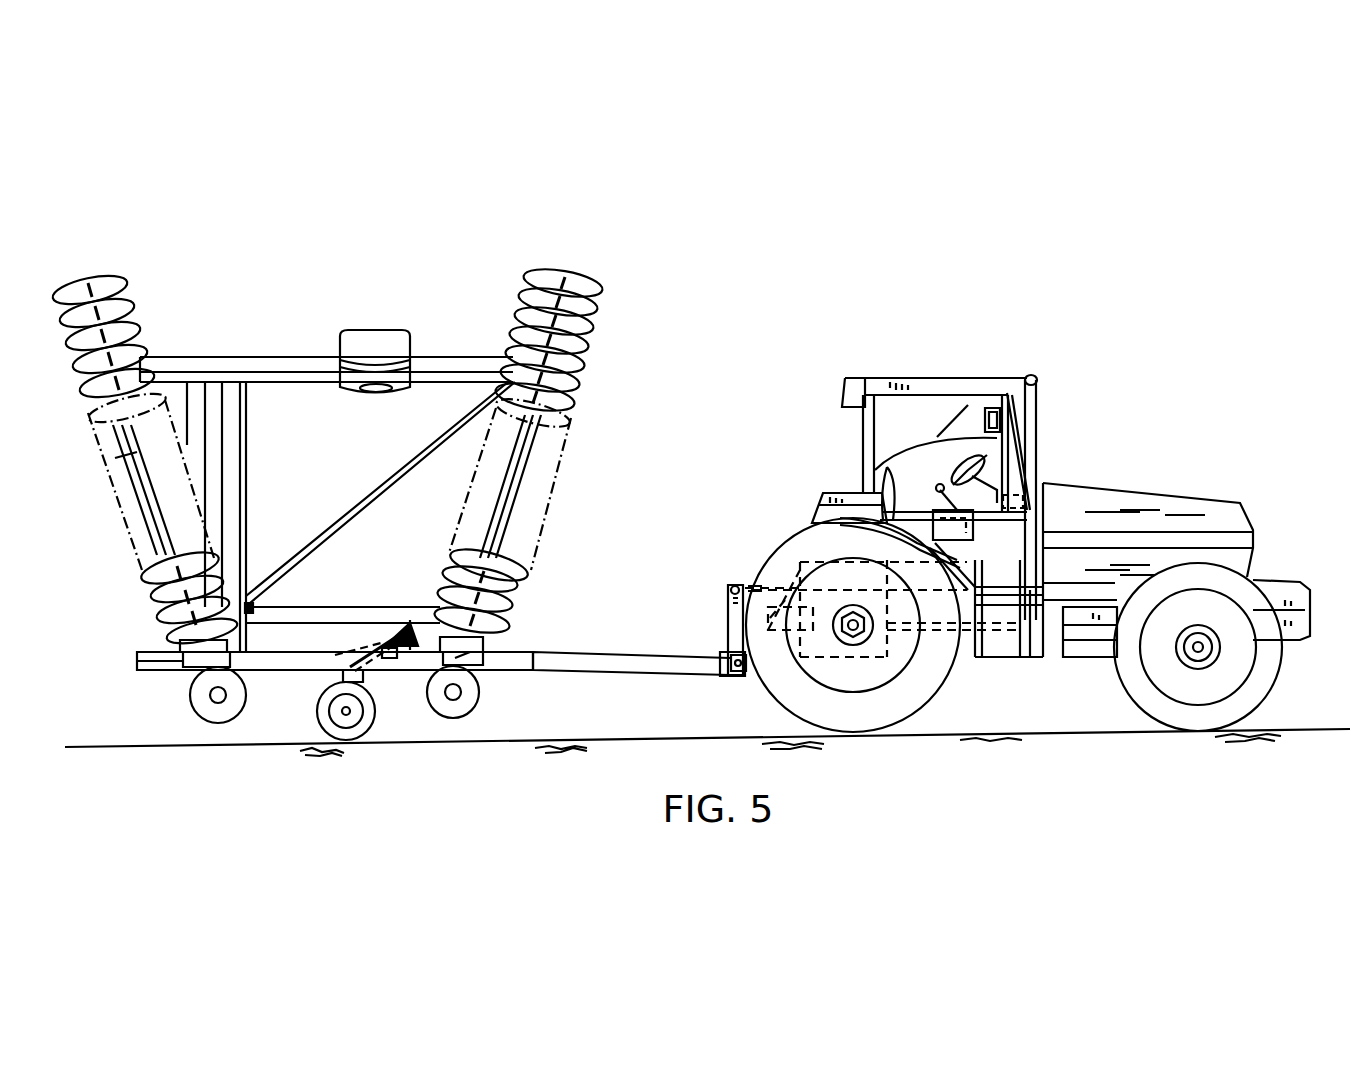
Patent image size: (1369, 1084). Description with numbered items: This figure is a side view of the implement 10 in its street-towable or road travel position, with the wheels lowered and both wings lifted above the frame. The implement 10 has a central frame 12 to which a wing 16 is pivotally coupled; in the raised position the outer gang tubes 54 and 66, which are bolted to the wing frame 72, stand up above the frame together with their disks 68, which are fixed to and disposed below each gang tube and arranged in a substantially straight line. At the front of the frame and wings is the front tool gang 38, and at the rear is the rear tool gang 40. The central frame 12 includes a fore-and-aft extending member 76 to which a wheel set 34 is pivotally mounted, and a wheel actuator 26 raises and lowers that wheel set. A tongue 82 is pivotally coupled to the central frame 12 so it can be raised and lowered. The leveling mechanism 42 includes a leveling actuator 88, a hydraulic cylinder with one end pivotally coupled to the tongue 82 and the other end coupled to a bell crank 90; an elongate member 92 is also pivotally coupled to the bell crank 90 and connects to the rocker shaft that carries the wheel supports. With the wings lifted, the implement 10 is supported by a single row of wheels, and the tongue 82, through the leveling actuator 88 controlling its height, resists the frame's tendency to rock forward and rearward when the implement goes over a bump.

The implement 10 is at (520, 165).
The central frame 12 is at (520, 640).
The wing 16 is at (630, 388).
The wheel actuator 26 is at (380, 652).
The wheel set 34 is at (377, 723).
The front tool gang 38 is at (518, 600).
The rear tool gang 40 is at (150, 603).
The leveling mechanism 42 is at (397, 608).
The outer gang tube 54 is at (560, 337).
The outer gang tube 66 is at (137, 450).
The disks 68 is at (118, 285).
The wing frame 72 is at (318, 381).
The fore-and-aft extending member 76 is at (280, 655).
The tongue 82 is at (627, 662).
The leveling actuator 88 is at (462, 655).
The bell crank 90 is at (418, 627).
The elongate member 92 is at (360, 623).